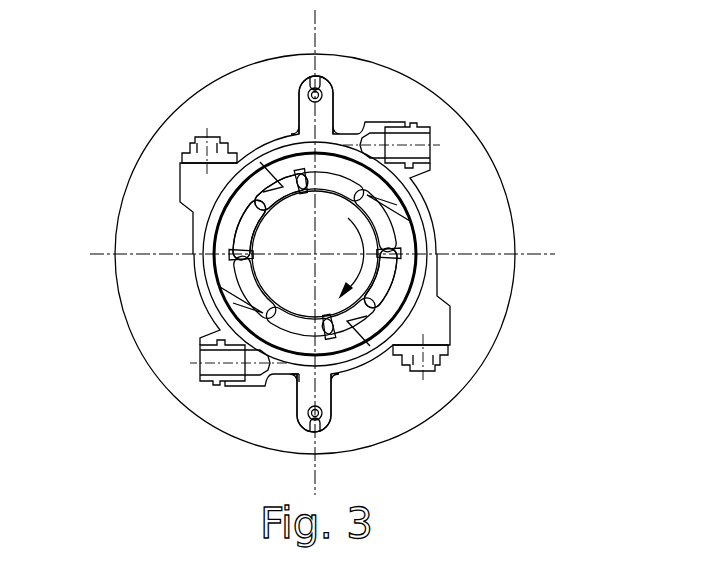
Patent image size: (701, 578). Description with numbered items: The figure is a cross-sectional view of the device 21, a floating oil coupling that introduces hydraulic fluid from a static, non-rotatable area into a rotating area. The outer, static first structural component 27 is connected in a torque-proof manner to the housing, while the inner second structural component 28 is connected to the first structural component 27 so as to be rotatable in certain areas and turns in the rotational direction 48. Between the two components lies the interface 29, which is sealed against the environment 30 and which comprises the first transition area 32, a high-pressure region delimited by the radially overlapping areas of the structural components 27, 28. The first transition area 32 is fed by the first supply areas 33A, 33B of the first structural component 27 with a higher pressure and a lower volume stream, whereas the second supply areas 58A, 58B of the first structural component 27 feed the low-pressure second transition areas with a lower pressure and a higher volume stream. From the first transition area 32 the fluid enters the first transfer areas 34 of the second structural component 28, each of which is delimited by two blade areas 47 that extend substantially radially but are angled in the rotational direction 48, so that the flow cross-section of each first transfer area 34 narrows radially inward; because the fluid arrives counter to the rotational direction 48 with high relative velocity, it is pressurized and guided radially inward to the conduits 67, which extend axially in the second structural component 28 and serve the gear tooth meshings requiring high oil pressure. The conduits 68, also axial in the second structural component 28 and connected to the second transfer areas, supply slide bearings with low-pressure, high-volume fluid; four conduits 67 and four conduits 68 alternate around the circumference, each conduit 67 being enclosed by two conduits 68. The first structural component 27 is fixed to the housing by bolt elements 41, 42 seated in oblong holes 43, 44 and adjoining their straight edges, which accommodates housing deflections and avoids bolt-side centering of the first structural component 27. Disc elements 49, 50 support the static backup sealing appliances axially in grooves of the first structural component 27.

The device 21 is at (125, 110).
The first structural component 27 is at (428, 199).
The second structural component 28 is at (228, 307).
The interface 29 is at (420, 232).
The environment 30 is at (240, 117).
The first transition area 32 is at (420, 170).
The first supply area 33A is at (420, 128).
The first supply area 33B is at (200, 365).
The first transfer area 34 is at (228, 262).
The bolt element 41 is at (318, 80).
The bolt element 42 is at (325, 422).
The oblong hole 43 is at (305, 118).
The oblong hole 44 is at (312, 428).
The blade area 47 is at (245, 207).
The rotational direction 48 is at (437, 277).
The disc element 49 is at (300, 184).
The disc element 50 is at (299, 398).
The second supply area 58A is at (200, 137).
The second supply area 58B is at (425, 372).
The conduit 67 is at (282, 186).
The conduit 68 is at (230, 233).